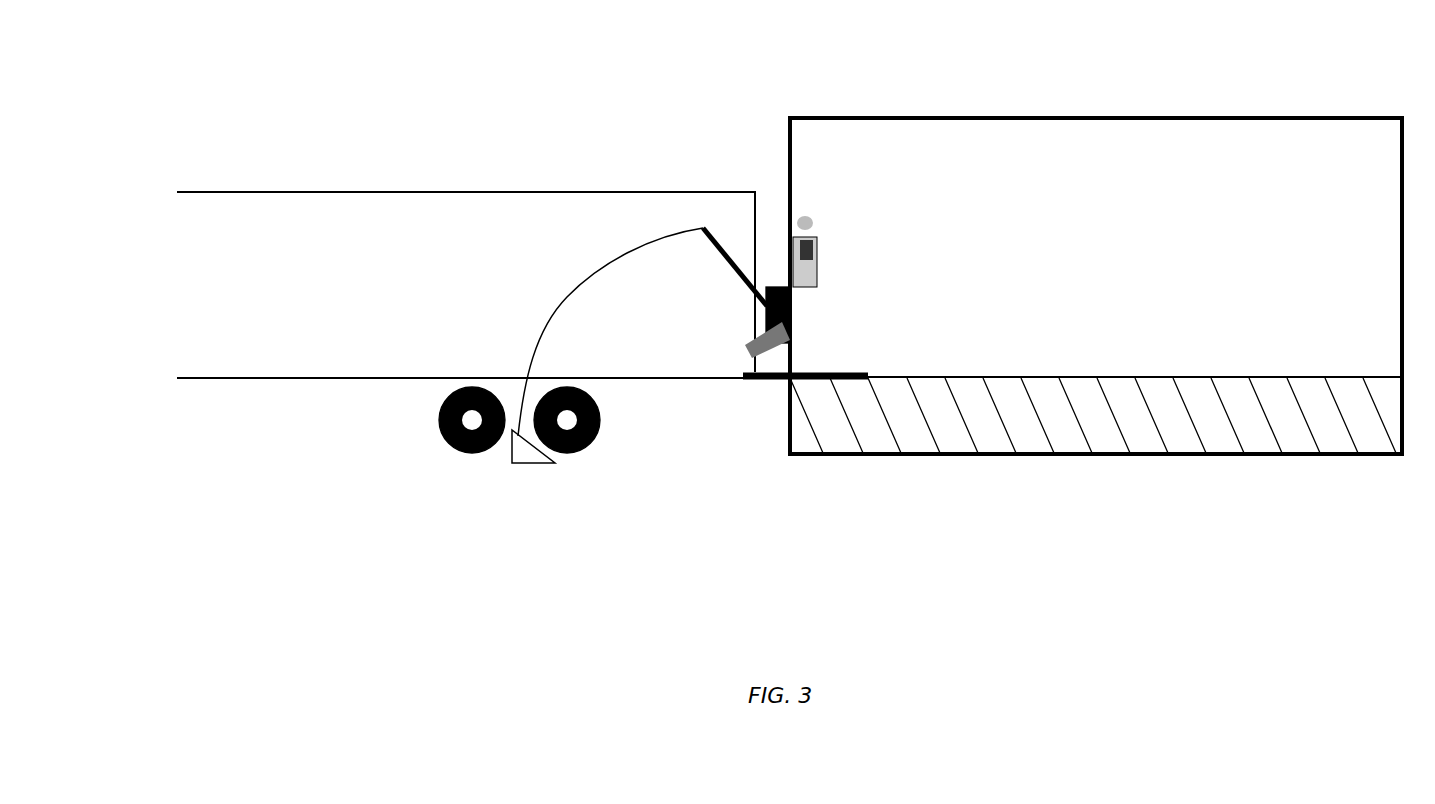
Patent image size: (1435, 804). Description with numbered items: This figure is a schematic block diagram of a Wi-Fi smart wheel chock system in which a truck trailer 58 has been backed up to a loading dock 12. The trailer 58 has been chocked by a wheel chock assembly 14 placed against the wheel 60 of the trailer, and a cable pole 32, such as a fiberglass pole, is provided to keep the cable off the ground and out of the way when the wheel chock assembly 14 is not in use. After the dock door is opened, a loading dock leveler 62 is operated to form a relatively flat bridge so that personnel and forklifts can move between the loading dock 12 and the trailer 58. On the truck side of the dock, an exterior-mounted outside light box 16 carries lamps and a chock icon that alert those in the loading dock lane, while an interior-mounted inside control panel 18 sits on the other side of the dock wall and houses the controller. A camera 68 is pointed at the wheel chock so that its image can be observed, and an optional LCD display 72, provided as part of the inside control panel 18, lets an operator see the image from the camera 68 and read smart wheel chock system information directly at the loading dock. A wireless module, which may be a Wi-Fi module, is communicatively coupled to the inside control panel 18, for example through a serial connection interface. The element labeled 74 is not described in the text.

The loading dock 12 is at (1028, 137).
The wheel chock assembly 14 is at (527, 457).
The outside light box 16 is at (767, 318).
The inside control panel 18 is at (803, 277).
The cable pole 32 is at (733, 236).
The truck trailer 58 is at (293, 217).
The wheel 60 is at (590, 447).
The loading dock leveler 62 is at (857, 367).
The camera 68 is at (760, 340).
The LCD display 72 is at (815, 260).
The emitter element 74 is at (813, 247).